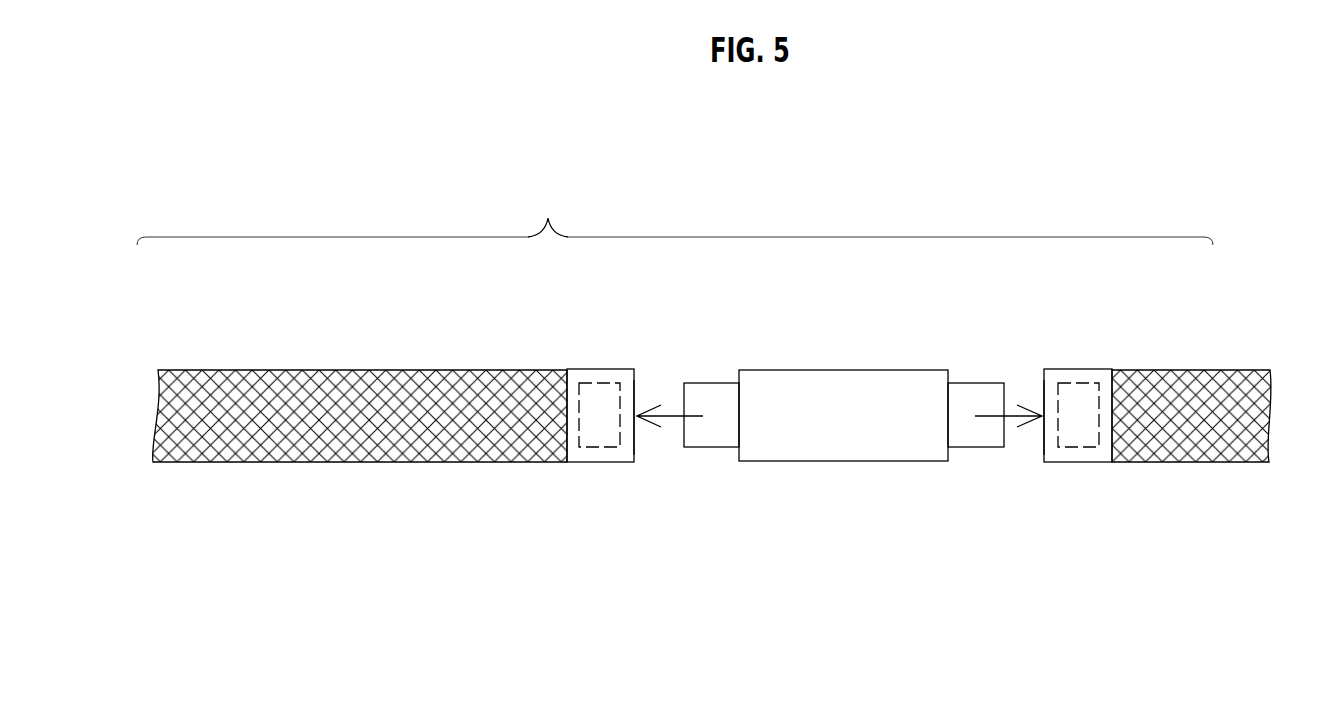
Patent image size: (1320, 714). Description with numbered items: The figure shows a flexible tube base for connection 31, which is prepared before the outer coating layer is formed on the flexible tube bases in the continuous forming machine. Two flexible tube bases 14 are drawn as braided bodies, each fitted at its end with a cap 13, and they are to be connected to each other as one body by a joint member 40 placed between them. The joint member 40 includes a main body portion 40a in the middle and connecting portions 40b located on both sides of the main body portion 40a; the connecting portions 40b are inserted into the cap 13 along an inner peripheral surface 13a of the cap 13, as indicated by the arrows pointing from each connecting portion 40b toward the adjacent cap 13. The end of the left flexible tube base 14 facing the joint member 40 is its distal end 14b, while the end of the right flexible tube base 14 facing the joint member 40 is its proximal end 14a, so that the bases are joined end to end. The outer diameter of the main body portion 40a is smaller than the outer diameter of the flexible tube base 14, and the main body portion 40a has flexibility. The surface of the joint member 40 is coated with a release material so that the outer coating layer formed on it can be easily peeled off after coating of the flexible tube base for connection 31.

The flexible tube base for connection 31 is at (675, 216).
The flexible tube base 14 is at (306, 442).
The cap 13 is at (839, 455).
The inner peripheral surface 13a is at (598, 380).
The proximal end 14a is at (1043, 438).
The distal end 14b is at (635, 433).
The joint member 40 is at (839, 462).
The main body portion 40a is at (833, 382).
The connecting portion 40b is at (709, 396).